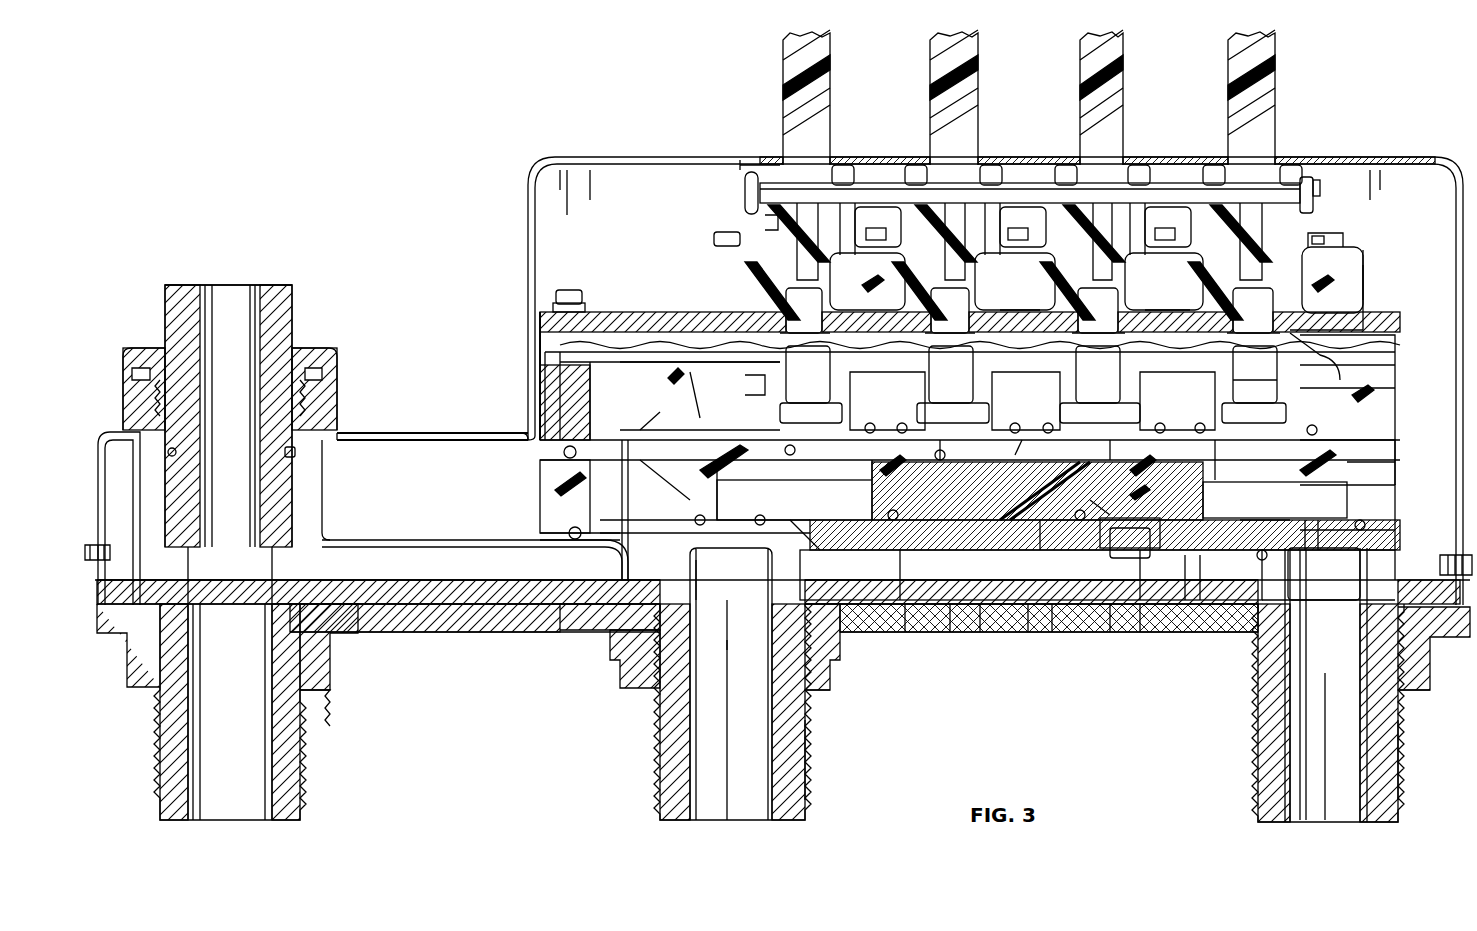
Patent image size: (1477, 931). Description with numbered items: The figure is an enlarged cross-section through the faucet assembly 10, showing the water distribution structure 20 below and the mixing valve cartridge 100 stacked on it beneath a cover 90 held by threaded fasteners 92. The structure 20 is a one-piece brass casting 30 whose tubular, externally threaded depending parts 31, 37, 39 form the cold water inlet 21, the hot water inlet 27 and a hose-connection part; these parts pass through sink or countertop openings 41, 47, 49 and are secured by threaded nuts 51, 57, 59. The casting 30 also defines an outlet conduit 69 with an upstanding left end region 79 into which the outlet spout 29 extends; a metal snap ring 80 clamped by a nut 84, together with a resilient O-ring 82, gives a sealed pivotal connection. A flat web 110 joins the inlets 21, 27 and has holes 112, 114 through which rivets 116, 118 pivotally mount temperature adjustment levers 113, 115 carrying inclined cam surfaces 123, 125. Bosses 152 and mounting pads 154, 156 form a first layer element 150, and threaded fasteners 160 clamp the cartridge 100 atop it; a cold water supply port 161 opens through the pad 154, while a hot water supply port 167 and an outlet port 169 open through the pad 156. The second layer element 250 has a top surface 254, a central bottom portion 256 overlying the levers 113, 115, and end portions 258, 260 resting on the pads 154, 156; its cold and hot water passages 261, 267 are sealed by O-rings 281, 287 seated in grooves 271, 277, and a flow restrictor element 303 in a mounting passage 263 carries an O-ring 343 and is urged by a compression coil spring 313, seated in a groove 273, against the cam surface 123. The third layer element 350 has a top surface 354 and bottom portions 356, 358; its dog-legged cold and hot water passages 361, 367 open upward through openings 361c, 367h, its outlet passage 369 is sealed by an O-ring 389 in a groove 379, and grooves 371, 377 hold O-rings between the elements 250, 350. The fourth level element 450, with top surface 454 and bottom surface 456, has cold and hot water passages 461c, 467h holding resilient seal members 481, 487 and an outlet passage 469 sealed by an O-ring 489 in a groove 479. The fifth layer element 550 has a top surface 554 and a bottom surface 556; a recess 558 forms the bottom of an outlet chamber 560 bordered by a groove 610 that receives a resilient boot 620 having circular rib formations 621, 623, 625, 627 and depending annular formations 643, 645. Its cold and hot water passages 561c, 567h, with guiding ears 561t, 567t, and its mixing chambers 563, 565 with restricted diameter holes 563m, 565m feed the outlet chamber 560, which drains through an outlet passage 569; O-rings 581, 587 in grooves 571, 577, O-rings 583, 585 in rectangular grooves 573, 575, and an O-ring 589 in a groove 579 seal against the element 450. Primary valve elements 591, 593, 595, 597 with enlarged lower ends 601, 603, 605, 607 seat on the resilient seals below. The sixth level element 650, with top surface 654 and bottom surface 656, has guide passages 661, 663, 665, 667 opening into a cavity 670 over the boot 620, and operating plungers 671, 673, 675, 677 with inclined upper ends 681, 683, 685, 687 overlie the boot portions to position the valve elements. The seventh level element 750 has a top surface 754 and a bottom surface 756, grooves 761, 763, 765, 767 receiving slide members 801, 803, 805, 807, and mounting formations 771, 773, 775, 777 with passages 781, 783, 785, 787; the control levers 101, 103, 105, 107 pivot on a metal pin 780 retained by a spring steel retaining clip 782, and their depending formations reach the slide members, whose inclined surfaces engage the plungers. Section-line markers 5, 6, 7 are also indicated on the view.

The electrical connector assembly 10 is at (331, 124).
The conduit fitting 20 is at (150, 274).
The right conduit 21 is at (1300, 822).
The middle conduit 27 is at (700, 822).
The left conduit 29 is at (292, 290).
The channel 30 is at (338, 518).
The threads of right conduit 31 is at (1404, 755).
The threads of middle conduit 37 is at (805, 755).
The threads of left conduit 39 is at (305, 758).
The right flange nut 41 is at (1450, 632).
The middle flange nut 47 is at (835, 660).
The left flange nut 49 is at (328, 660).
The right lock nut 51 is at (1400, 700).
The middle lock nut 57 is at (812, 700).
The left lock nut 59 is at (318, 700).
The channel floor 69 is at (401, 539).
The nut threads 79 is at (332, 402).
The nut 80 is at (290, 355).
The seal ring 82 is at (296, 453).
The nut 84 is at (140, 350).
The mounting plate 90 is at (420, 438).
The bracket and screw 92 is at (120, 540).
The housing 100 is at (643, 252).
The terminal 101 is at (1275, 52).
The terminal 103 is at (1123, 50).
The terminal 105 is at (978, 50).
The terminal 107 is at (830, 50).
The base plate 110 is at (860, 640).
The base plate opening 112 is at (1052, 640).
The base plate opening 113 is at (1140, 645).
The base plate opening 114 is at (905, 640).
The base plate opening 115 is at (982, 640).
The base plate wall 116 is at (1110, 640).
The base plate wall 118 is at (950, 640).
The insulating block 123 is at (1195, 570).
The bolt 125 is at (918, 555).
The lower module 150 is at (1390, 550).
The base plate wall 152 is at (1028, 640).
The conduit boss 154 is at (1288, 565).
The conduit wall 156 is at (765, 560).
The retaining clip 160 is at (840, 207).
The conduit bore 161 is at (1350, 600).
The conduit bore 167 is at (703, 605).
The bracket 169 is at (610, 560).
The module layer 250 is at (1402, 527).
The contact 254 is at (1265, 510).
The insulating block 256 is at (855, 565).
The rivet 258 is at (1258, 550).
The contact strip 260 is at (800, 520).
The rivet 261 is at (1369, 506).
The conductor 263 is at (1098, 512).
The post 267 is at (757, 506).
The contact 271 is at (1317, 516).
The conductor strip 273 is at (1055, 540).
The rivet 277 is at (748, 500).
The conductor 281 is at (1352, 640).
The rivet 287 is at (695, 515).
The rivet 303 is at (1085, 512).
The switch 313 is at (1145, 528).
The conductor 343 is at (1105, 485).
The module layer 350 is at (1402, 482).
The conductor 354 is at (940, 482).
The insulating strip 356 is at (905, 530).
The wall 358 is at (627, 560).
The contact bar 361 is at (1245, 506).
The contact 361c is at (1390, 468).
The contact bar 367 is at (855, 505).
The hole 367h is at (895, 472).
The conductor 369 is at (570, 480).
The contact 371 is at (1210, 488).
The rivet 377 is at (895, 512).
The rivet 379 is at (555, 535).
The block 389 is at (565, 496).
The module layer 450 is at (1402, 449).
The conductor 454 is at (680, 416).
The conductor 456 is at (715, 468).
The contact 461c is at (1327, 454).
The hole 467h is at (780, 450).
The rivet 469 is at (540, 462).
The conductor 479 is at (680, 485).
The post 481 is at (1215, 460).
The contact 487 is at (918, 450).
The strip 489 is at (550, 465).
The module layer 550 is at (1402, 381).
The insulating sheet 554 is at (640, 362).
The conductor 556 is at (695, 395).
The contact 558 is at (745, 388).
The seal 560 is at (560, 345).
The contact 561c is at (1342, 400).
The terminal tab 561t is at (1330, 378).
The rivet 563 is at (1150, 420).
The member 563m is at (1140, 385).
The rivet 565 is at (1031, 415).
The member 565m is at (995, 388).
The hole 567h is at (887, 415).
The tab 567t is at (770, 398).
The wall 569 is at (560, 373).
The rivet 571 is at (1318, 430).
The contact 573 is at (1137, 455).
The rivet 575 is at (1039, 447).
The rivet 577 is at (934, 447).
The contact 579 is at (657, 378).
The post 581 is at (1340, 450).
The post 583 is at (1118, 448).
The post 585 is at (960, 450).
The post 587 is at (712, 447).
The block 589 is at (585, 425).
The slide 591 is at (1271, 369).
The slide 593 is at (1114, 369).
The slide 595 is at (967, 369).
The slide 597 is at (824, 369).
The slide base 601 is at (1254, 415).
The slide base 603 is at (1100, 415).
The slide base 605 is at (953, 415).
The slide base 607 is at (811, 415).
The module layer 610 is at (545, 352).
The insulating plate 620 is at (620, 312).
The contact 621 is at (1326, 294).
The contact 623 is at (1168, 300).
The contact 625 is at (1023, 300).
The contact 627 is at (882, 292).
The slide stem 643 is at (1255, 390).
The member 645 is at (920, 380).
The module layer 650 is at (1402, 333).
The clip seat 654 is at (615, 305).
The wall 656 is at (1322, 332).
The contact block 661 is at (1253, 320).
The contact block 663 is at (1098, 320).
The contact block 665 is at (950, 320).
The contact block 667 is at (805, 320).
The wall 670 is at (540, 320).
The contact block 671 is at (1271, 310).
The contact block 673 is at (1116, 310).
The contact block 675 is at (969, 310).
The contact block 677 is at (824, 310).
The terminal block 681 is at (1296, 278).
The terminal clamp 683 is at (1168, 226).
The terminal clamp 685 is at (1023, 226).
The terminal clamp 687 is at (878, 226).
The terminal module 750 is at (1380, 284).
The tab 754 is at (1343, 242).
The base 756 is at (1363, 310).
The wall 761 is at (1363, 280).
The terminal block 763 is at (1133, 278).
The terminal block 765 is at (988, 278).
The terminal block 767 is at (840, 278).
The bushing 771 is at (1287, 165).
The bushing 773 is at (1135, 165).
The bushing 775 is at (986, 165).
The bushing 777 is at (840, 165).
The bus bar 780 is at (750, 192).
The opening 781 is at (1208, 168).
The end cap 782 is at (1320, 185).
The opening 783 is at (1062, 168).
The opening 785 is at (905, 168).
The opening 787 is at (760, 165).
The conductor 801 is at (1173, 205).
The conductor 803 is at (1038, 205).
The conductor 805 is at (898, 205).
The conductor 807 is at (775, 255).
The section line 5 is at (500, 287).
The section line 6 is at (500, 422).
The section line 7 is at (472, 516).